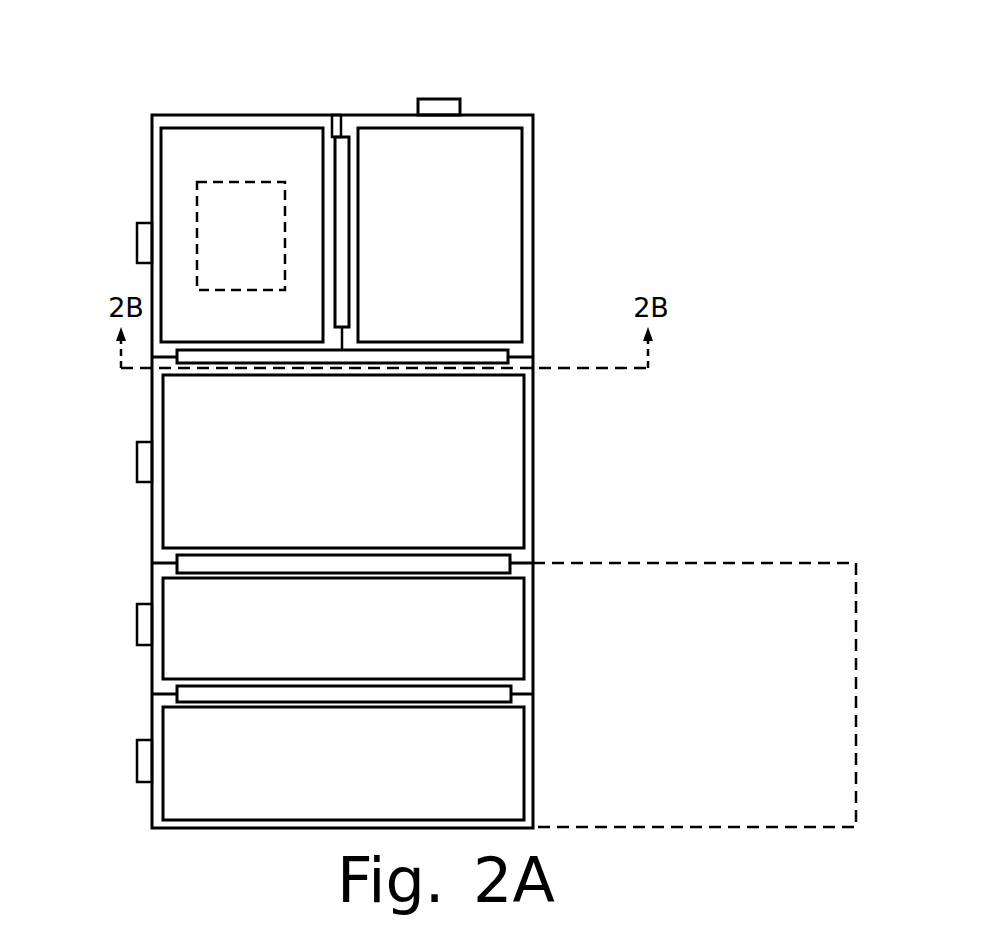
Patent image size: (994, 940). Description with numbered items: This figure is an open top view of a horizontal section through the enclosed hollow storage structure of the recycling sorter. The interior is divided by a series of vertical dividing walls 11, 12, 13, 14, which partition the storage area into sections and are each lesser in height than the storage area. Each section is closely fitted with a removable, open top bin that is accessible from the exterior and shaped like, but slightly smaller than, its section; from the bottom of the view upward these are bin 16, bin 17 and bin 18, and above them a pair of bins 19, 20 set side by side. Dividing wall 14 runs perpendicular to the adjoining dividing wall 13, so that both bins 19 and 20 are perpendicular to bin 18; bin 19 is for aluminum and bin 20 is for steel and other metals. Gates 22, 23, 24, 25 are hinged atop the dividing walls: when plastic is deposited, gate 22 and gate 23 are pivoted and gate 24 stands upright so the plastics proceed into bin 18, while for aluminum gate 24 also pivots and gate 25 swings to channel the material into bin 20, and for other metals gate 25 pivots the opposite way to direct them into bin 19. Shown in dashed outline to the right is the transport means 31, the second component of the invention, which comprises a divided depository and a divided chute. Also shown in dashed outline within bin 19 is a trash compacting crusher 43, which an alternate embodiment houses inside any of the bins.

The dividing wall 11 is at (160, 698).
The dividing wall 12 is at (525, 562).
The dividing wall 13 is at (518, 355).
The dividing wall 14 is at (341, 135).
The bin 16 is at (210, 785).
The bin 17 is at (223, 625).
The bin 18 is at (448, 447).
The bin 19 is at (228, 152).
The bin 20 is at (435, 217).
The gate 22 is at (240, 693).
The gate 23 is at (230, 563).
The gate 24 is at (292, 358).
The gate 25 is at (343, 190).
The transport means 31 is at (690, 745).
The trash compacting crusher 43 is at (225, 217).